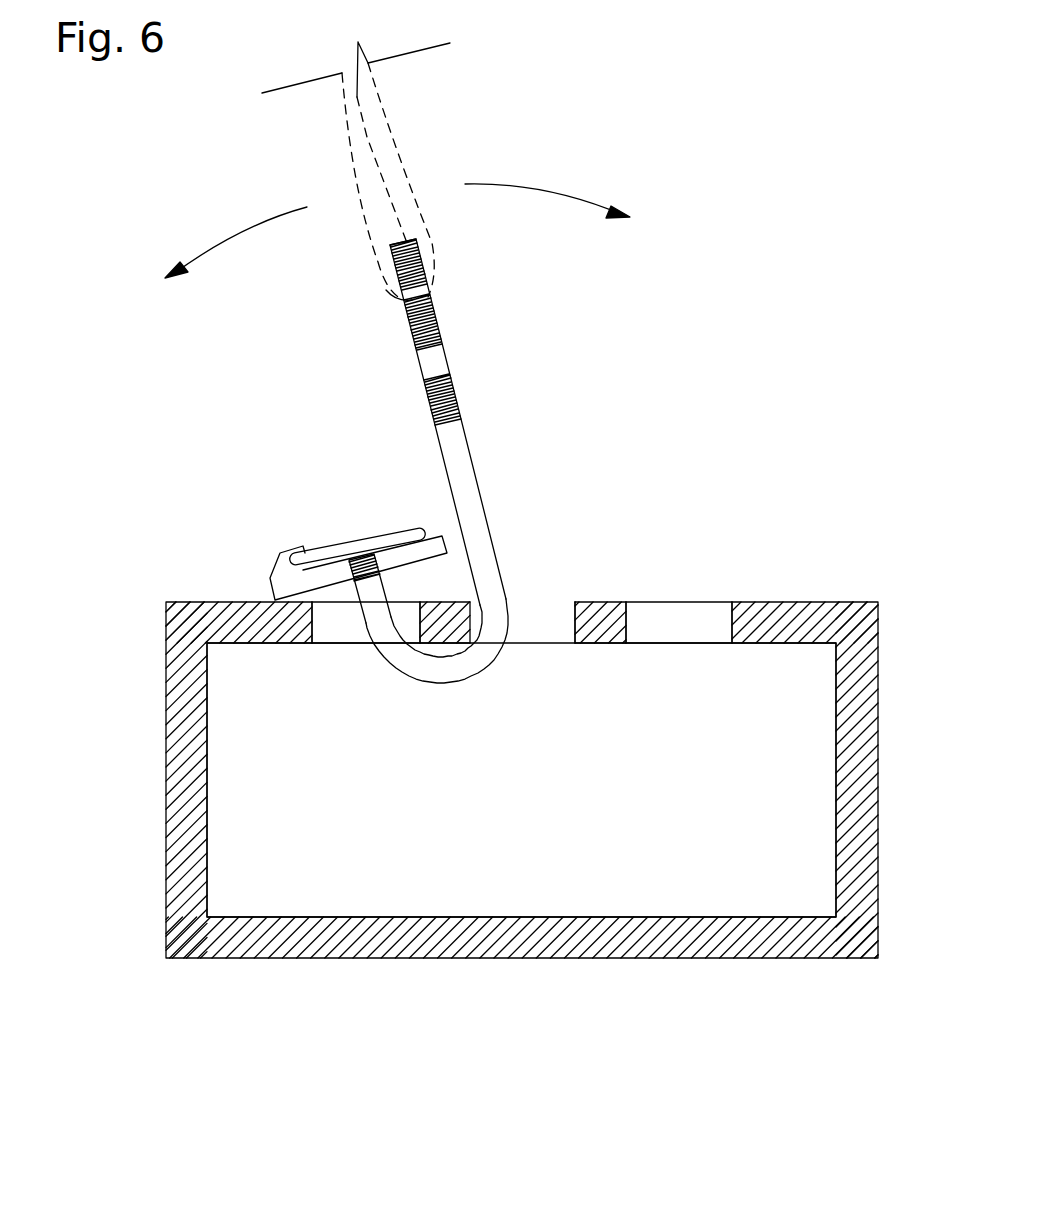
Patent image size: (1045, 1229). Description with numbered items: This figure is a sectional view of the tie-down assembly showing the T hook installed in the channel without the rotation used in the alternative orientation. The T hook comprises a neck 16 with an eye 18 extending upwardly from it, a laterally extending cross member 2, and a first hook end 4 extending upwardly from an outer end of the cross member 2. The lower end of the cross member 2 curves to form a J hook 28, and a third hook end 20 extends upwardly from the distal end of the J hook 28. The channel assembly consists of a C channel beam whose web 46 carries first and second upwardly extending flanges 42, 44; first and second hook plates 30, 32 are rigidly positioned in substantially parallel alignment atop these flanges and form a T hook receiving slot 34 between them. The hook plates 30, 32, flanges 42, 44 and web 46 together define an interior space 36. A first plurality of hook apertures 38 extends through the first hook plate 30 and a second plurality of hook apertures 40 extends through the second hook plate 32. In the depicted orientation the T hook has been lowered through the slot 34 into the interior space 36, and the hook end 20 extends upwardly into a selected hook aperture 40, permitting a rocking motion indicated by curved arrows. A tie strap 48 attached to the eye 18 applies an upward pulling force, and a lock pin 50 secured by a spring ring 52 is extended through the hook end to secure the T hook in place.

The laterally extending cross member 2 is at (475, 512).
The first hook end 4 is at (450, 417).
The neck 16 is at (435, 362).
The eye 18 is at (417, 295).
The third hook end 20 is at (370, 600).
The J hook 28 is at (452, 673).
The first hook plate 30 is at (260, 627).
The second hook plate 32 is at (823, 623).
The T hook receiving slot 34 is at (533, 623).
The interior space 36 is at (600, 808).
The first plurality of hook apertures 38 is at (338, 627).
The second plurality of hook apertures 40 is at (678, 623).
The first upwardly extending flange 42 is at (858, 773).
The second upwardly extending flange 44 is at (187, 792).
The web 46 is at (548, 940).
The tie strap 48 is at (430, 232).
The lock pin 50 is at (412, 557).
The spring ring 52 is at (332, 553).